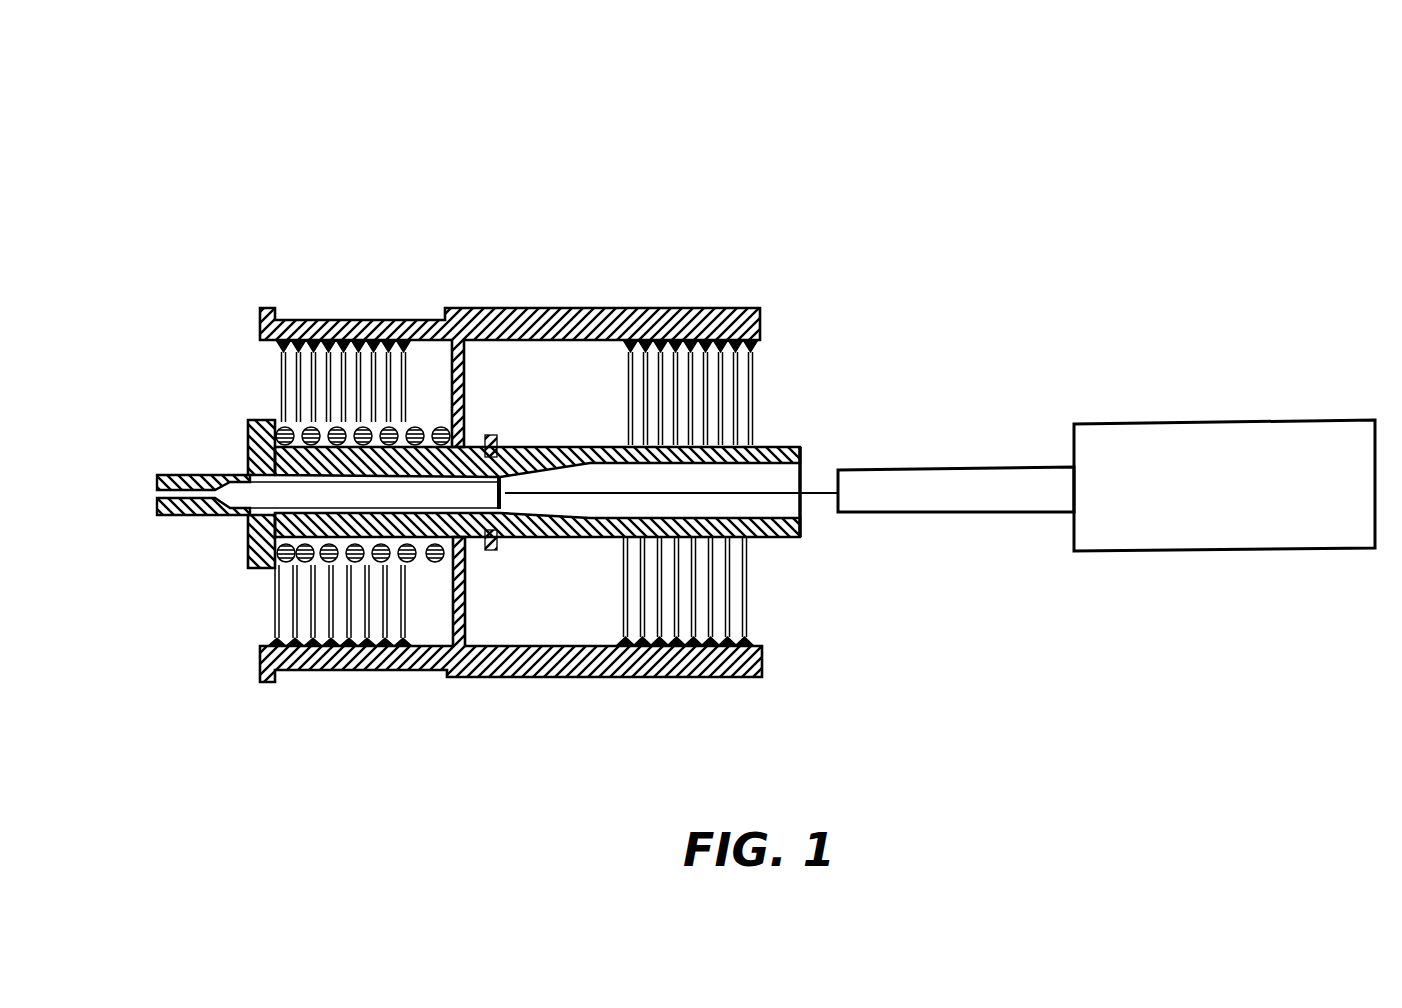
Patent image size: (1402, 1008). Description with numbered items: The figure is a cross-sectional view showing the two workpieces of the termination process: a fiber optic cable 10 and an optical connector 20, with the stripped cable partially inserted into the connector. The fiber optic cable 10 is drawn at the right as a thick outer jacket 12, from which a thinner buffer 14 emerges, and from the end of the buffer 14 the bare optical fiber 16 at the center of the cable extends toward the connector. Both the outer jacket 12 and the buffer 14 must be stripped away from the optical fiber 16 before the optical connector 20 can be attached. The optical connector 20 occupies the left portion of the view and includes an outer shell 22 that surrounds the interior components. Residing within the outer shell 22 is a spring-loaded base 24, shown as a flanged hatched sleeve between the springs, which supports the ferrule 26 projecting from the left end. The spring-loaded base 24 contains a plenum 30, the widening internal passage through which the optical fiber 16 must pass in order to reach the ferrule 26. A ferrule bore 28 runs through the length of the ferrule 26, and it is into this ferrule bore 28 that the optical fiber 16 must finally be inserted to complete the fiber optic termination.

The fiber optic cable 10 is at (1312, 405).
The outer jacket 12 is at (1153, 423).
The buffer 14 is at (930, 467).
The optical fiber 16 is at (812, 488).
The optical connector 20 is at (357, 303).
The outer shell 22 is at (637, 308).
The spring-loaded base 24 is at (250, 420).
The ferrule 26 is at (230, 518).
The ferrule bore 28 is at (185, 503).
The plenum 30 is at (595, 518).